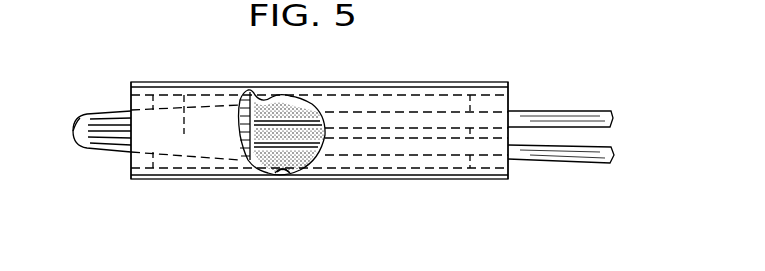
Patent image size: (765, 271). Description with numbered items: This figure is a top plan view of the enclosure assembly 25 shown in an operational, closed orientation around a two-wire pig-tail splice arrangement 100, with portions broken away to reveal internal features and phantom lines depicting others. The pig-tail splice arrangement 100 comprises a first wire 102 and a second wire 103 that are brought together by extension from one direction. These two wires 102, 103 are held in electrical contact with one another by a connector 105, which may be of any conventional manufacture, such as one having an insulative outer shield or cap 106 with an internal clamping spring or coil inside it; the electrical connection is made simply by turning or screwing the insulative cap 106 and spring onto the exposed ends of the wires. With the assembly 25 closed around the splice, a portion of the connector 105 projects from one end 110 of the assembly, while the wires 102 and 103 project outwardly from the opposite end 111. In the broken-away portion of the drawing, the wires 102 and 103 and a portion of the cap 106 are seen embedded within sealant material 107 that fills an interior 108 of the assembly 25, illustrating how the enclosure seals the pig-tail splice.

The assembly 25 is at (398, 70).
The pig-tail splice arrangement 100 is at (184, 95).
The first wire 102 is at (309, 122).
The second wire 103 is at (315, 148).
The connector 105 is at (107, 112).
The insulative outer shield or cap 106 is at (75, 122).
The sealant material 107 is at (280, 176).
The interior 108 is at (272, 100).
The one end 110 is at (130, 100).
The opposite end 111 is at (509, 94).